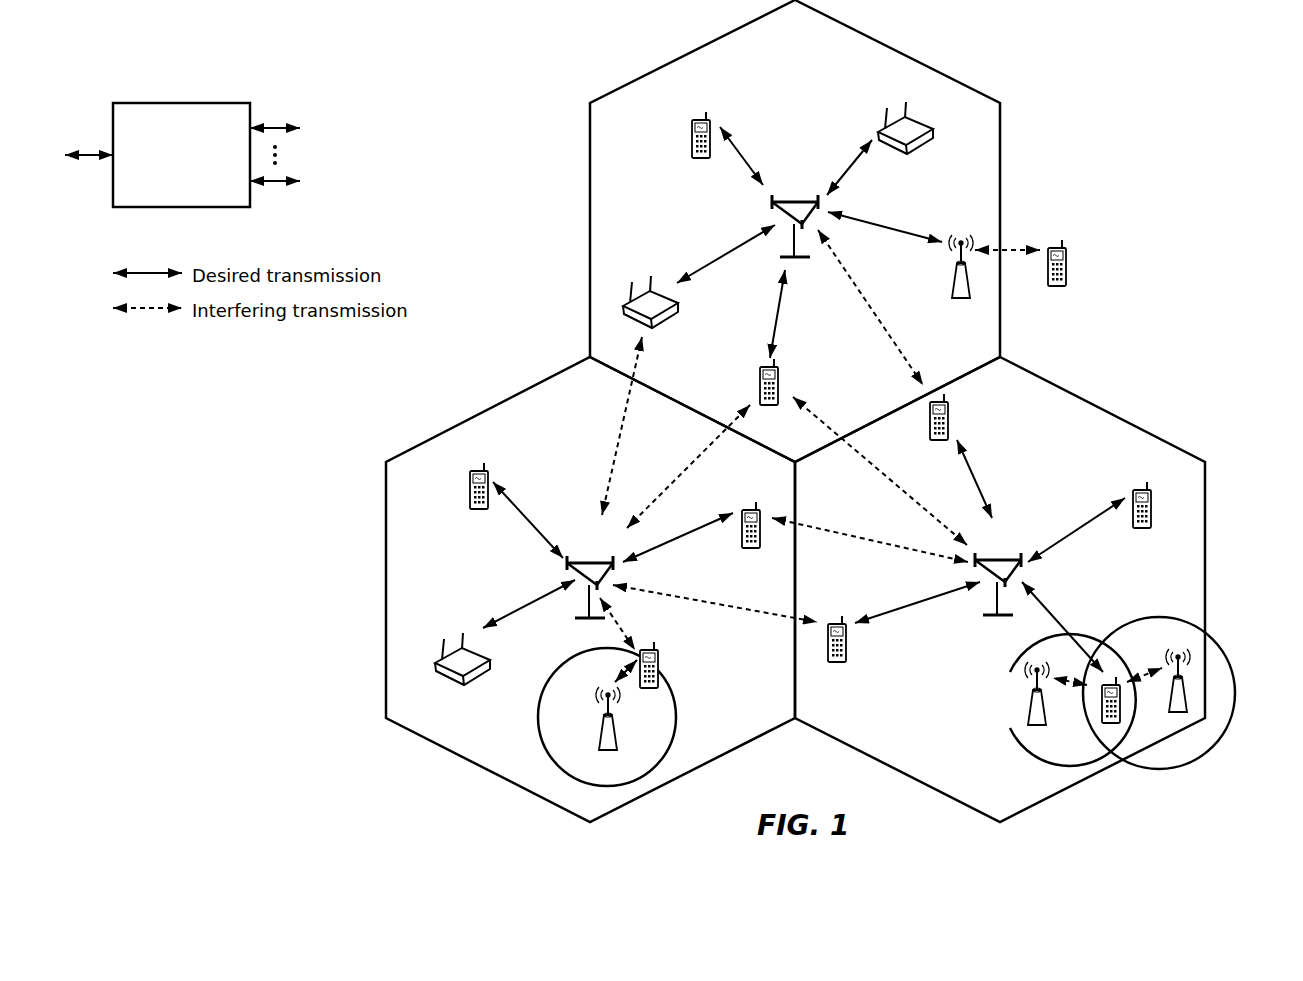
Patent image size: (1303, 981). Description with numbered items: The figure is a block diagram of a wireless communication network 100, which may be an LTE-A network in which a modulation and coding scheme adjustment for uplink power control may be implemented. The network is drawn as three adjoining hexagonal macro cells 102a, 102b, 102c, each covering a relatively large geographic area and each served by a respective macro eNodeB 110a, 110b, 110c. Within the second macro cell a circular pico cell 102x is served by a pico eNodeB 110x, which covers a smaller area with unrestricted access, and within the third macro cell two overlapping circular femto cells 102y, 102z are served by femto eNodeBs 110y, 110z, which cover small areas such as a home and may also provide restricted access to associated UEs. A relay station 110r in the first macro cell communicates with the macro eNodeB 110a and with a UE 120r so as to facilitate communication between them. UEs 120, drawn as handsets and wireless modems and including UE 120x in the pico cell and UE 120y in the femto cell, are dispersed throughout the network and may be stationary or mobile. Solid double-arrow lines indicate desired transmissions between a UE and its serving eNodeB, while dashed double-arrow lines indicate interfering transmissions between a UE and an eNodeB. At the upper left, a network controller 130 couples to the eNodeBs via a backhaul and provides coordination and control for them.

The wireless communication network 100 is at (1140, 68).
The macro cell 102a is at (897, 50).
The macro cell 102b is at (488, 410).
The macro cell 102c is at (1105, 411).
The pico cell 102x is at (559, 667).
The femto cell 102y is at (1011, 667).
The femto cell 102z is at (1152, 617).
The macro eNodeB 110a is at (793, 200).
The macro eNodeB 110b is at (590, 560).
The macro eNodeB 110c is at (998, 558).
The relay station 110r is at (950, 283).
The pico eNodeB 110x is at (617, 742).
The femto eNodeB 110y is at (1045, 718).
The femto eNodeB 110z is at (1186, 705).
The user equipment (UE) 120 is at (693, 128).
The UE 120r is at (1069, 284).
The UE 120x is at (658, 663).
The UE 120y is at (1100, 718).
The network controller 130 is at (177, 102).